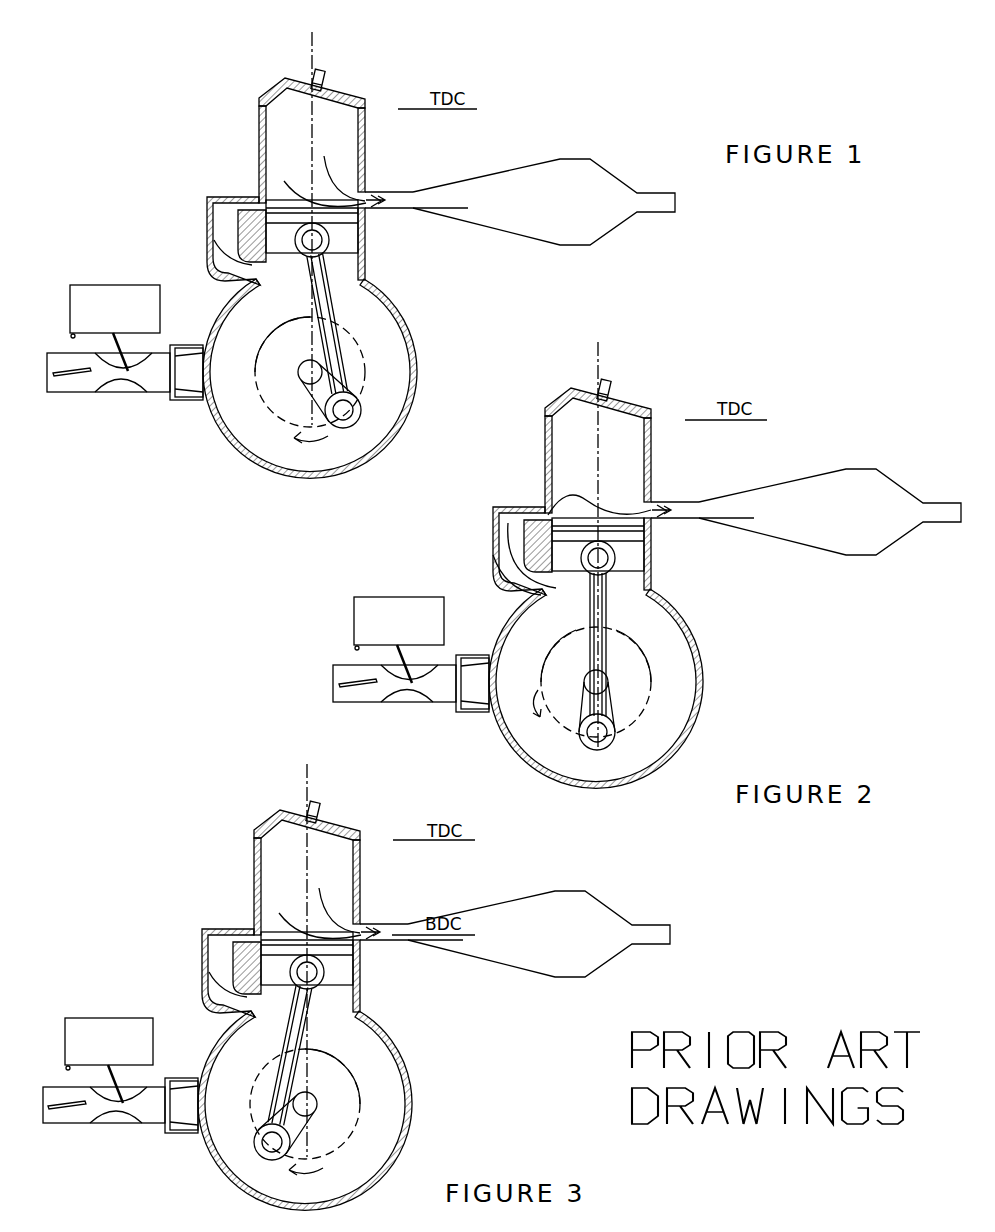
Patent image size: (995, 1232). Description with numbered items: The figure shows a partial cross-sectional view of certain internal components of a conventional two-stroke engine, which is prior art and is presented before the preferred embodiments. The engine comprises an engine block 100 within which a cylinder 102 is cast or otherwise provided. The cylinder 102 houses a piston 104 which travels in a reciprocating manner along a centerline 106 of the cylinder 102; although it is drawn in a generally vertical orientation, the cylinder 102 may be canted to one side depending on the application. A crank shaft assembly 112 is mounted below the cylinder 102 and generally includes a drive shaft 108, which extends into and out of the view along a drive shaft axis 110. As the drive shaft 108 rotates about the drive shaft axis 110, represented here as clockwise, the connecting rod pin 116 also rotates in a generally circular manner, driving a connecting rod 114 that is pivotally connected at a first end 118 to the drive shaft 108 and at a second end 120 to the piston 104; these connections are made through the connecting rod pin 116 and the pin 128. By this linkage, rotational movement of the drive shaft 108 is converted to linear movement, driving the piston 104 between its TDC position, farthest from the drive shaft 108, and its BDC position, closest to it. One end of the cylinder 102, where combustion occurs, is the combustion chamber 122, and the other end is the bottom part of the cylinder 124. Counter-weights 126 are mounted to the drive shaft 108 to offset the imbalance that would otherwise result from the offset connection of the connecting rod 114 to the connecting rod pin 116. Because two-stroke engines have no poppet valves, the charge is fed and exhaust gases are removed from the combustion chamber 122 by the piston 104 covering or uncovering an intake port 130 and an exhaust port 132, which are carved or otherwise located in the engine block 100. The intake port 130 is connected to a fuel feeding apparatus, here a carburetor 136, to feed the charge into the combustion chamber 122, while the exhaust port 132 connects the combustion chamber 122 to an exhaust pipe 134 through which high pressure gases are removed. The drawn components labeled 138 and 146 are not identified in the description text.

In FIG. 1, the engine block 100 is at (351, 154).
In FIG. 2, the engine block 100 is at (598, 464).
In FIG. 3, the engine block 100 is at (307, 886).
In FIG. 1, the cylinder 102 is at (398, 203).
In FIG. 2, the cylinder 102 is at (647, 554).
In FIG. 3, the cylinder 102 is at (356, 976).
In FIG. 1, the piston 104 is at (338, 139).
In FIG. 2, the piston 104 is at (607, 506).
In FIG. 3, the piston 104 is at (327, 913).
In FIG. 1, the centerline 106 is at (352, 225).
In FIG. 2, the centerline 106 is at (639, 544).
In FIG. 3, the centerline 106 is at (348, 958).
In FIG. 1, the drive shaft 108 is at (381, 327).
In FIG. 2, the drive shaft 108 is at (667, 637).
In FIG. 3, the drive shaft 108 is at (376, 1060).
In FIG. 1, the drive shaft axis 110 is at (359, 358).
In FIG. 2, the drive shaft axis 110 is at (647, 668).
In FIG. 3, the drive shaft axis 110 is at (354, 1090).
In FIG. 1, the crank shaft assembly 112 is at (388, 323).
In FIG. 2, the crank shaft assembly 112 is at (598, 644).
In FIG. 3, the crank shaft assembly 112 is at (290, 1055).
In FIG. 1, the connecting rod 114 is at (363, 234).
In FIG. 2, the connecting rod 114 is at (598, 544).
In FIG. 3, the connecting rod 114 is at (307, 958).
In FIG. 1, the connecting rod pin 116 is at (397, 379).
In FIG. 2, the connecting rod pin 116 is at (597, 732).
In FIG. 3, the connecting rod pin 116 is at (272, 1142).
In FIG. 1, the first end 118 is at (385, 370).
In FIG. 2, the first end 118 is at (597, 707).
In FIG. 3, the first end 118 is at (286, 1125).
In FIG. 1, the second end 120 is at (429, 186).
In FIG. 2, the second end 120 is at (702, 510).
In FIG. 3, the second end 120 is at (411, 932).
In FIG. 1, the combustion chamber 122 is at (268, 81).
In FIG. 2, the combustion chamber 122 is at (594, 392).
In FIG. 3, the combustion chamber 122 is at (265, 812).
In FIG. 1, the bottom part of the cylinder 124 is at (336, 337).
In FIG. 2, the bottom part of the cylinder 124 is at (627, 647).
In FIG. 3, the bottom part of the cylinder 124 is at (334, 1069).
In FIG. 1, the counter-weights 126 is at (254, 362).
In FIG. 2, the counter-weights 126 is at (537, 703).
In FIG. 3, the counter-weights 126 is at (306, 1169).
In FIG. 1, the pin 128 is at (250, 186).
In FIG. 2, the pin 128 is at (556, 498).
In FIG. 3, the pin 128 is at (245, 915).
In FIG. 1, the intake port 130 is at (222, 215).
In FIG. 2, the intake port 130 is at (510, 533).
In FIG. 3, the intake port 130 is at (218, 946).
In FIG. 1, the exhaust port 132 is at (413, 180).
In FIG. 2, the exhaust port 132 is at (661, 510).
In FIG. 3, the exhaust port 132 is at (370, 932).
In FIG. 1, the exhaust pipe 134 is at (544, 169).
In FIG. 2, the exhaust pipe 134 is at (830, 500).
In FIG. 3, the exhaust pipe 134 is at (539, 921).
In FIG. 1, the carburetor 136 is at (125, 357).
In FIG. 2, the carburetor 136 is at (411, 668).
In FIG. 3, the carburetor 136 is at (120, 1090).
In FIG. 1, the intake passage 138 is at (203, 252).
In FIG. 2, the intake passage 138 is at (496, 571).
In FIG. 3, the intake passage 138 is at (198, 983).
In FIG. 1, the spark plug 146 is at (352, 70).
In FIG. 2, the spark plug 146 is at (639, 381).
In FIG. 3, the spark plug 146 is at (347, 803).